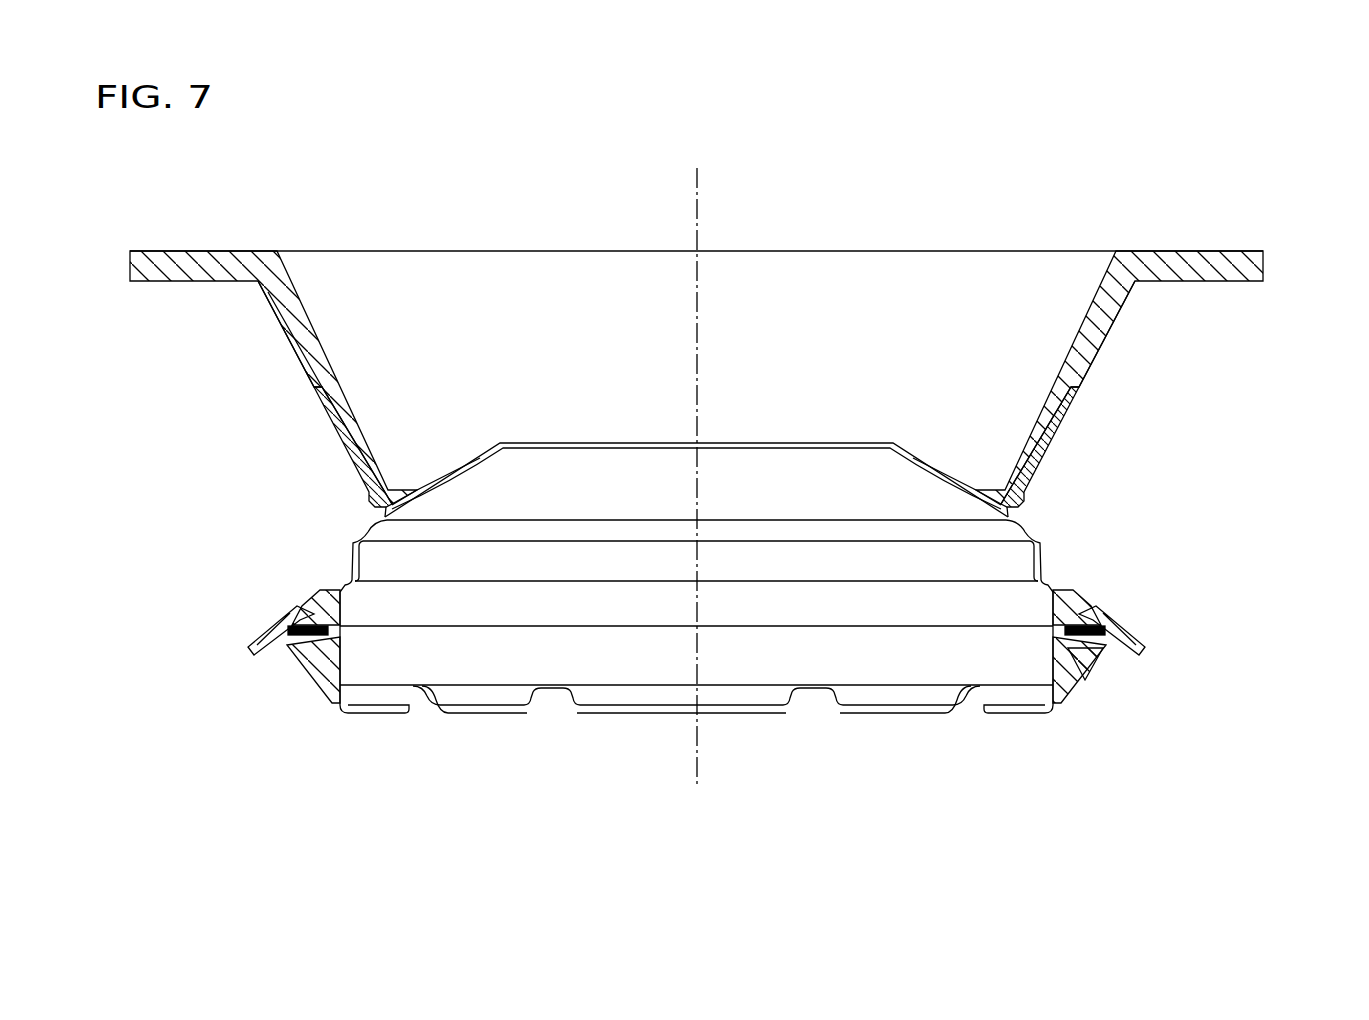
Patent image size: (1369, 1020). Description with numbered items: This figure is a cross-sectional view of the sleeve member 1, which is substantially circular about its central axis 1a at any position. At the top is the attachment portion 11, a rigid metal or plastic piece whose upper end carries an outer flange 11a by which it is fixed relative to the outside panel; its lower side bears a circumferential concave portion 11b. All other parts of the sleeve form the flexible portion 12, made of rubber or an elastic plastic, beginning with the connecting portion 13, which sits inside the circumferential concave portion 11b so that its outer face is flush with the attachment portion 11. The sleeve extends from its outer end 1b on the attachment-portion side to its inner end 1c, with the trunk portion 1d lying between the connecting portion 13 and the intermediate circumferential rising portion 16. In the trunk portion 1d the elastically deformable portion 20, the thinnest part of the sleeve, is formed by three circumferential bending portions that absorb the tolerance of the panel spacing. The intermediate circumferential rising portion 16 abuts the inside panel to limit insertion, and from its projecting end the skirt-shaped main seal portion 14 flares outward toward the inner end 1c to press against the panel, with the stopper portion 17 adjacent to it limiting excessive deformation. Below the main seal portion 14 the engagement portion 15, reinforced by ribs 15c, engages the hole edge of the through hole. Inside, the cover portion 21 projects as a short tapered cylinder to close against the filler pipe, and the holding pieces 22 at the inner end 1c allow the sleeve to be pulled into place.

The sleeve member 1 is at (1034, 222).
The central axis 1a is at (699, 210).
The outer end 1b is at (1115, 251).
The inner end 1c is at (903, 715).
The trunk portion 1d is at (1045, 540).
The attachment portion 11 is at (721, 333).
The outer flange 11a is at (696, 377).
The circumferential concave portion 11b is at (1060, 420).
The flexible portion 12 is at (1045, 562).
The connecting portion 13 is at (1048, 458).
The main seal portion 14 is at (1142, 628).
The engagement portion 15 is at (1093, 670).
The ribs 15c is at (318, 683).
The intermediate circumferential rising portion 16 is at (323, 593).
The stopper portion 17 is at (1125, 648).
The elastically deformable portion 20 is at (1040, 525).
The cover portion 21 is at (910, 485).
The holding pieces 22 is at (608, 700).